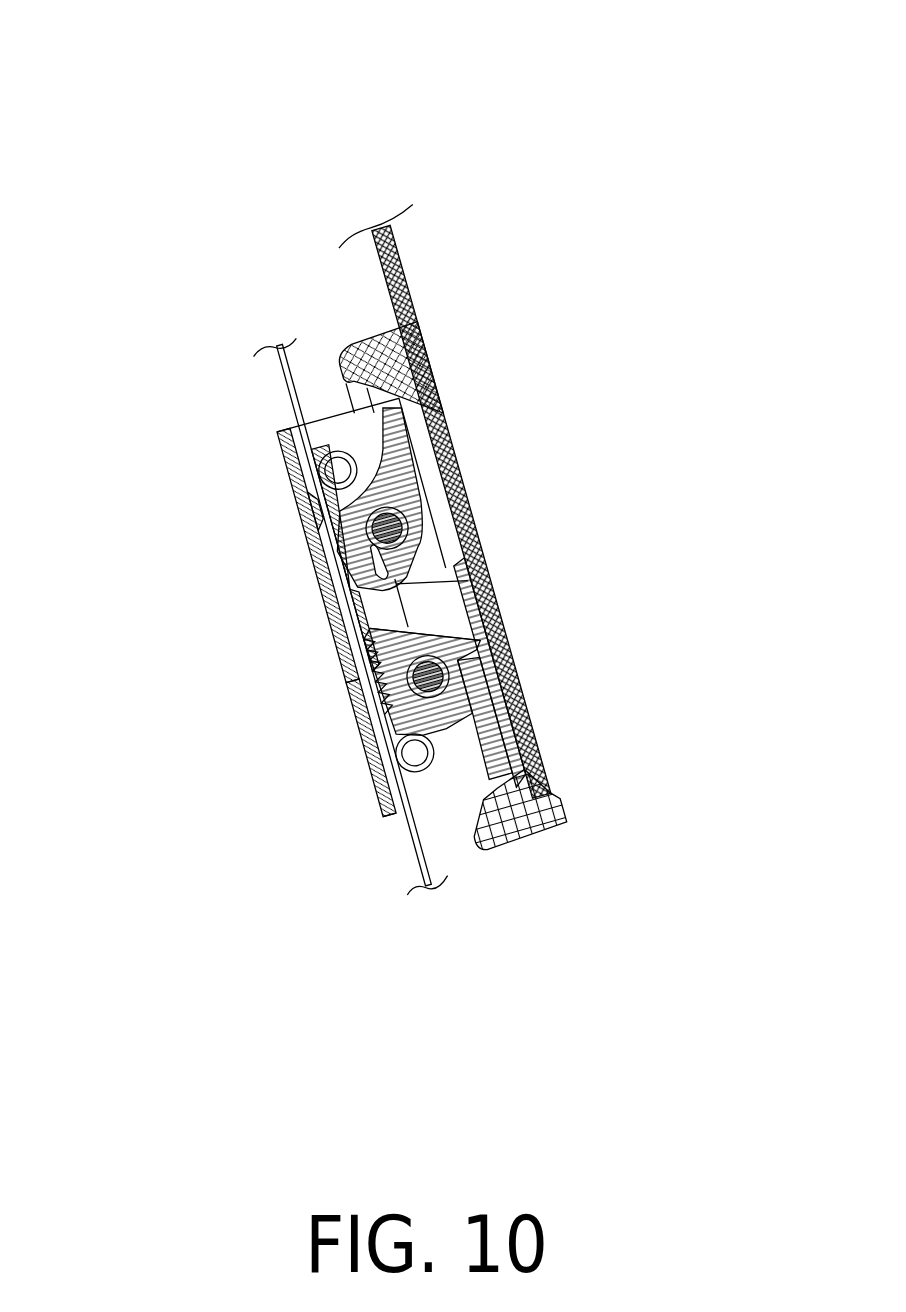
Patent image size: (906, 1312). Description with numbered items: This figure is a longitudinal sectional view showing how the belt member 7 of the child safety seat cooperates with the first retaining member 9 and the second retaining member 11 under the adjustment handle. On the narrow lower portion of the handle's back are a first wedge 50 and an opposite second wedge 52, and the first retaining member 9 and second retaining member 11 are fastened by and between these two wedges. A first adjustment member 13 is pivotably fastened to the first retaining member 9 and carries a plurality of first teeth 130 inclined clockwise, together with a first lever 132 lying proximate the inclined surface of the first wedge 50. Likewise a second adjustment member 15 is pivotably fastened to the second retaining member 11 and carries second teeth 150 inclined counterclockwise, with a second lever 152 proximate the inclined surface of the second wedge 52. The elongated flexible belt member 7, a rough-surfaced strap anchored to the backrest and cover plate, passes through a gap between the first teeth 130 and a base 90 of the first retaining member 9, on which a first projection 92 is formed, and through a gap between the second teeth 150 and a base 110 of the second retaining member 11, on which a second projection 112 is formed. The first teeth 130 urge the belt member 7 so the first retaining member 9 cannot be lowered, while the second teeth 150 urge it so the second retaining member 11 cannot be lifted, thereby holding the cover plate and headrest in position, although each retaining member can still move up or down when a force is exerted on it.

The first wedge 50 is at (369, 373).
The second wedge 52 is at (508, 790).
The first retaining member 9 is at (433, 402).
The first lever 132 is at (353, 438).
The first adjustment member 13 is at (338, 582).
The belt member 7 is at (297, 410).
The first projection 92 is at (323, 515).
The first teeth 130 is at (323, 557).
The base 90 is at (357, 615).
The second adjustment member 15 is at (450, 684).
The second teeth 150 is at (367, 668).
The second lever 152 is at (520, 712).
The second retaining member 11 is at (457, 780).
The second projection 112 is at (378, 733).
The base 110 is at (393, 803).